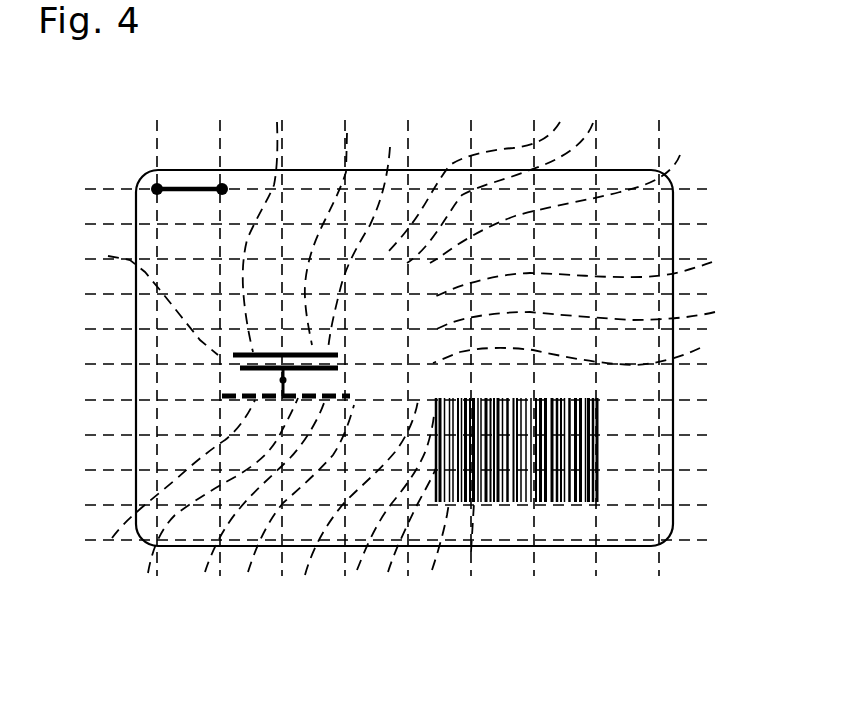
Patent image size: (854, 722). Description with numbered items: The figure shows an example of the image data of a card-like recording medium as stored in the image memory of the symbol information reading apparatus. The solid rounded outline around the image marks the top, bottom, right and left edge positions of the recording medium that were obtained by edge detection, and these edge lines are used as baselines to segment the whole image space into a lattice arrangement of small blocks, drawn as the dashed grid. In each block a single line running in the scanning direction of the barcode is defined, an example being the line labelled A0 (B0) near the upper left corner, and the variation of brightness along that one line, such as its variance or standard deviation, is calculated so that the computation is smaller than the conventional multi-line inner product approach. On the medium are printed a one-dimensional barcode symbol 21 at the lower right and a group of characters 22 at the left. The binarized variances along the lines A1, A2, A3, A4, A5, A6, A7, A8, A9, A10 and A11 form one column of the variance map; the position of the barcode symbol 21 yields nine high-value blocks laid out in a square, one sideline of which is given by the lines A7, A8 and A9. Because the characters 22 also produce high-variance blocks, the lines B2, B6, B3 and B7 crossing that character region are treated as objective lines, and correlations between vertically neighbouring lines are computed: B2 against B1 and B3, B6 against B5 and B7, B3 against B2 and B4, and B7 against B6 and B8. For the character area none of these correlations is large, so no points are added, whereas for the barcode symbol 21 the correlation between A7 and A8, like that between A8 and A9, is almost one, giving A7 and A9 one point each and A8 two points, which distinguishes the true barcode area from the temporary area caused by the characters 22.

The scanning line A0 is at (135, 153).
The scanning line B0 is at (203, 188).
The scanning line A1 is at (477, 174).
The scanning line A2 is at (515, 183).
The scanning line A3 is at (569, 203).
The scanning line A4 is at (586, 274).
The scanning line A5 is at (586, 319).
The scanning line A6 is at (587, 354).
The scanning line A7 is at (351, 504).
The scanning line A8 is at (383, 513).
The scanning line A9 is at (405, 539).
The scanning line A10 is at (452, 537).
The scanning line A11 is at (468, 555).
The scanning line B1 is at (266, 226).
The scanning line B2 is at (146, 300).
The scanning line B3 is at (171, 483).
The scanning line B4 is at (215, 502).
The scanning line B5 is at (330, 223).
The scanning line B6 is at (364, 237).
The scanning line B7 is at (254, 501).
The scanning line B8 is at (294, 502).
The 1D barcode symbol 21 is at (603, 436).
The characters 22 is at (225, 398).